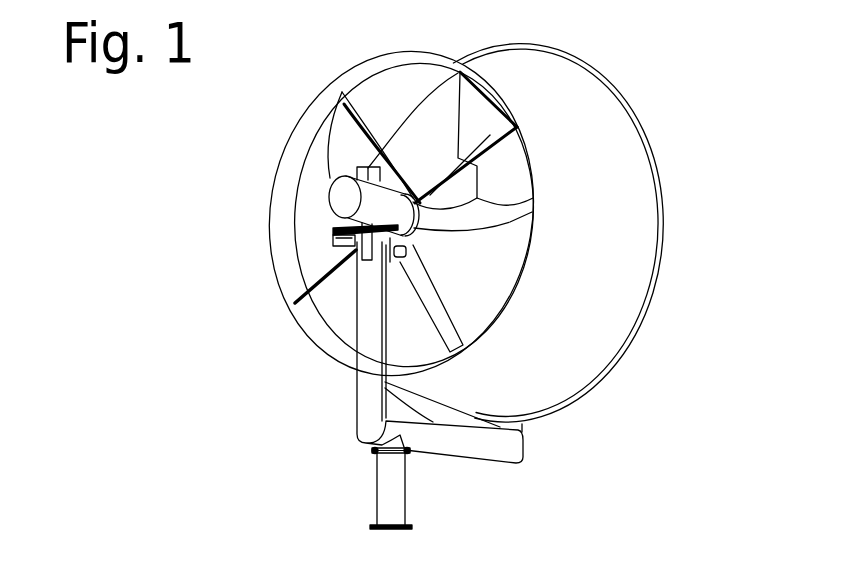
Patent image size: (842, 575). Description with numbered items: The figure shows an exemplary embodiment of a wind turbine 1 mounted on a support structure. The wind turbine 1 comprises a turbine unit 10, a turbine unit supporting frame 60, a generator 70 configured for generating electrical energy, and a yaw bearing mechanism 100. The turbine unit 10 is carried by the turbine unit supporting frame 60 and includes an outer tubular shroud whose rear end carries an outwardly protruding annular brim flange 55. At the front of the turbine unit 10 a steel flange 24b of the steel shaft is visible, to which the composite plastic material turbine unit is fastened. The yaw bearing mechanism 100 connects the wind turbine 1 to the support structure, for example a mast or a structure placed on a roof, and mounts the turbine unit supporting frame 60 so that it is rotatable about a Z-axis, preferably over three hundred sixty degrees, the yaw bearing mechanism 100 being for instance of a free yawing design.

The wind turbine 1 is at (271, 137).
The turbine unit 10 is at (640, 348).
The steel flange 24b is at (414, 204).
The annular brim flange 55 is at (658, 206).
The turbine unit supporting frame 60 is at (352, 410).
The generator 70 is at (344, 198).
The yaw bearing mechanism 100 is at (412, 497).